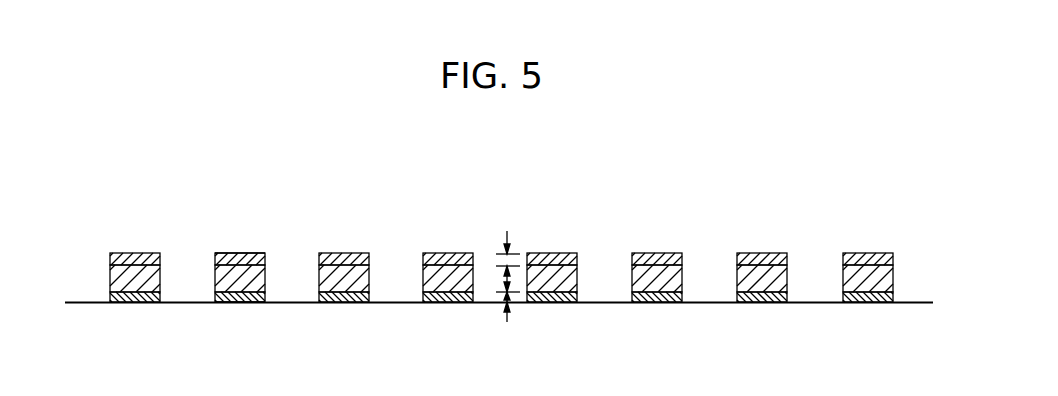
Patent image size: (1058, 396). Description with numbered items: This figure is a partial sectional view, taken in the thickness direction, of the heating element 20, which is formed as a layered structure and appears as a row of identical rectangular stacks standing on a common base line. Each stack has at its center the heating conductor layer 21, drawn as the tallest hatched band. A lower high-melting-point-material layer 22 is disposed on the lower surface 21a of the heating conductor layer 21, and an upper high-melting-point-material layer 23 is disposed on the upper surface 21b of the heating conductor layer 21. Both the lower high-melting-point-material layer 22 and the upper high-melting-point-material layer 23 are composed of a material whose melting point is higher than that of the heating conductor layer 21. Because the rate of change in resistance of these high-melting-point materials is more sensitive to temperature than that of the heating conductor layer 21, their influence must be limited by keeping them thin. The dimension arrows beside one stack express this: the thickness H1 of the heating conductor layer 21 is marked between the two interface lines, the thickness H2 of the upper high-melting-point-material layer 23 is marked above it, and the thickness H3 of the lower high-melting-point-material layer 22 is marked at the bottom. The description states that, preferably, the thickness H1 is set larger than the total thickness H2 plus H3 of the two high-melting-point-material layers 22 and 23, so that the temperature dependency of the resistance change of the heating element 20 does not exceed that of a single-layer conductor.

The heating element 20 is at (330, 213).
The heating conductor layer 21 is at (113, 280).
The lower surface 21a is at (237, 303).
The upper surface 21b is at (240, 262).
The lower high-melting-point-material layer 22 is at (132, 303).
The upper high-melting-point-material layer 23 is at (137, 260).
The thickness of the heating conductor layer H1 is at (503, 273).
The thickness of the upper high-melting-point-material layer H2 is at (501, 259).
The thickness of the lower high-melting-point-material layer H3 is at (498, 300).